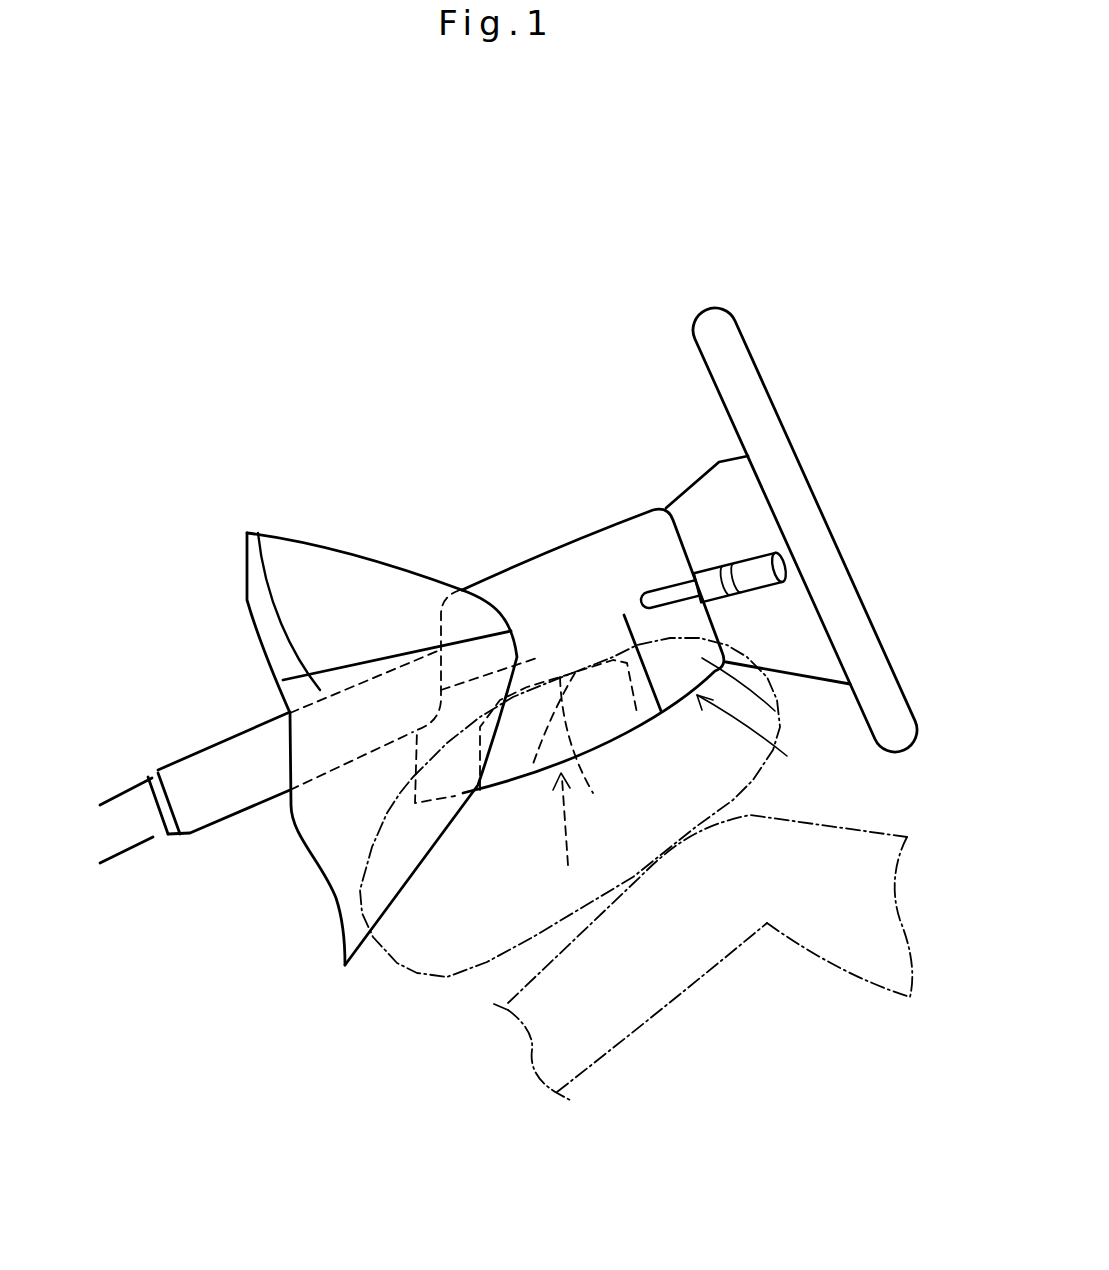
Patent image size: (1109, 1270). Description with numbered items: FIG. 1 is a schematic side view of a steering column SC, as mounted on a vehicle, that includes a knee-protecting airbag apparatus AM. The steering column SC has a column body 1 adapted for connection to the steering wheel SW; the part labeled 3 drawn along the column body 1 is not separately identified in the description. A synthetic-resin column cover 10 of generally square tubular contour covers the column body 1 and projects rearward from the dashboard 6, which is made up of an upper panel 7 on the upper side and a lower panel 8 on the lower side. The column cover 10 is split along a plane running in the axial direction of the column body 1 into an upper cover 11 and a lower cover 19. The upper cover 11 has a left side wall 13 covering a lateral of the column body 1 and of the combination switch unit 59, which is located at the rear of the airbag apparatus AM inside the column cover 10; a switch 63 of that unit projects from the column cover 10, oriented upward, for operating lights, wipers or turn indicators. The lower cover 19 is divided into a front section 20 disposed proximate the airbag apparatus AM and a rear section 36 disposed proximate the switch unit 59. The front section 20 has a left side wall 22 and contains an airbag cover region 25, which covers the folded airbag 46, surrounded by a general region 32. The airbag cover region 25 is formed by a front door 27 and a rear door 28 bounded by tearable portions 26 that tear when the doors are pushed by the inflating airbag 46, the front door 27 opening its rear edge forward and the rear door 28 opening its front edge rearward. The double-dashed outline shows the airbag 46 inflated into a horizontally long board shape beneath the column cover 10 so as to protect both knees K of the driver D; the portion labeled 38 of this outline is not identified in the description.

The column body 1 is at (270, 733).
The steering shaft 3 is at (220, 775).
The dashboard 6 is at (370, 430).
The upper panel 7 is at (355, 602).
The lower panel 8 is at (258, 533).
The column cover 10 is at (625, 403).
The upper cover 11 is at (566, 541).
The left side wall 13 is at (657, 533).
The lower cover 19 is at (630, 590).
The front section 20 is at (538, 487).
The airbag cover region 25 is at (581, 660).
The general region 32 is at (537, 667).
The left side wall 22 is at (647, 710).
The tearable portions 26 is at (574, 753).
The front door 27 is at (507, 760).
The rear door 28 is at (610, 720).
The rear section 36 is at (787, 756).
The airbag upper portion 38 is at (775, 711).
The airbag 46 is at (413, 972).
The combination switch unit 59 is at (779, 531).
The switch 63 is at (778, 562).
The steering wheel SW is at (771, 350).
The steering column SC is at (633, 447).
The knee-protecting airbag apparatus AM is at (567, 834).
The knees K is at (733, 903).
The driver D is at (870, 955).